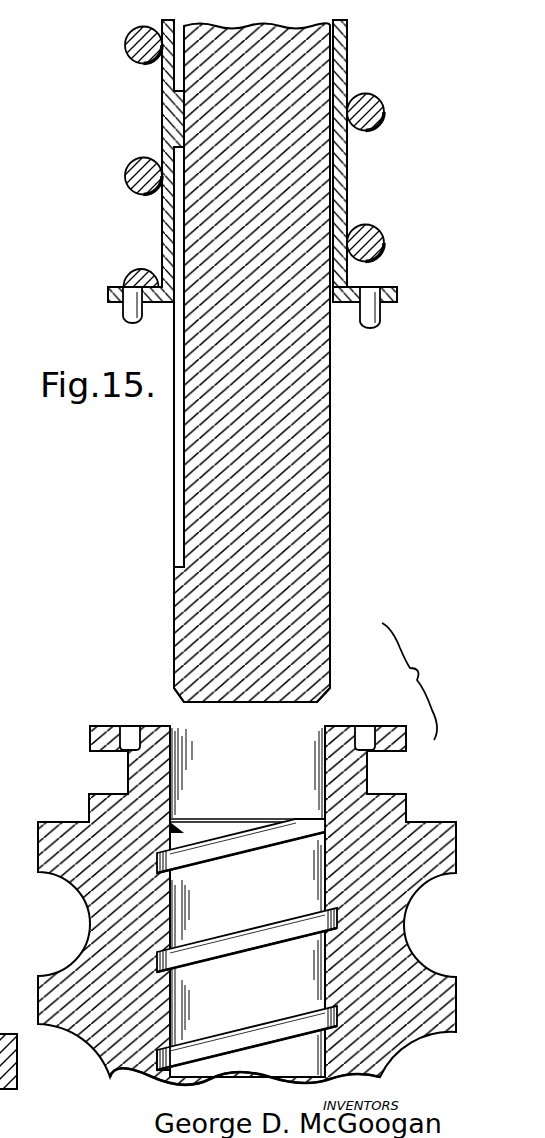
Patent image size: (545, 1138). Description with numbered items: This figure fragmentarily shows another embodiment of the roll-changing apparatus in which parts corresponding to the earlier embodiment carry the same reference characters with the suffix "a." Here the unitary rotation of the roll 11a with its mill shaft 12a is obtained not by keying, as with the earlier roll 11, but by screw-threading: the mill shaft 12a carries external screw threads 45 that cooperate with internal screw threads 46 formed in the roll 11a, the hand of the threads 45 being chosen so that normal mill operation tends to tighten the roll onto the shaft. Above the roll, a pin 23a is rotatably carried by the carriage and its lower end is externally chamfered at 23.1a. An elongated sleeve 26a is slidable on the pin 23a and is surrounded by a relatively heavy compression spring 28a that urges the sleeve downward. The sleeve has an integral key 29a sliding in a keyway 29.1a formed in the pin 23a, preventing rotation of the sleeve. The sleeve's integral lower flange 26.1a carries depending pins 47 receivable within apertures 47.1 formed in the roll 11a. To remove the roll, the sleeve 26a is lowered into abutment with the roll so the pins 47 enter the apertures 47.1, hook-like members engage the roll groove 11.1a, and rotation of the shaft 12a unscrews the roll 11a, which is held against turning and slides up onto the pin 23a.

The roll 11 is at (12, 1121).
The roll 11a is at (34, 822).
The roll groove 11.1a is at (368, 773).
The mill shaft 12a is at (258, 1015).
The pin 23a is at (310, 453).
The chamfer 23.1a is at (173, 690).
The sleeve 26a is at (338, 160).
The lower flange 26.1a is at (386, 298).
The compression spring 28a is at (132, 185).
The key 29a is at (176, 118).
The keyway 29.1a is at (173, 497).
The external screw threads 45 is at (227, 943).
The internal screw threads 46 is at (150, 1083).
The depending pin 47 is at (132, 308).
The aperture 47.1 is at (124, 727).